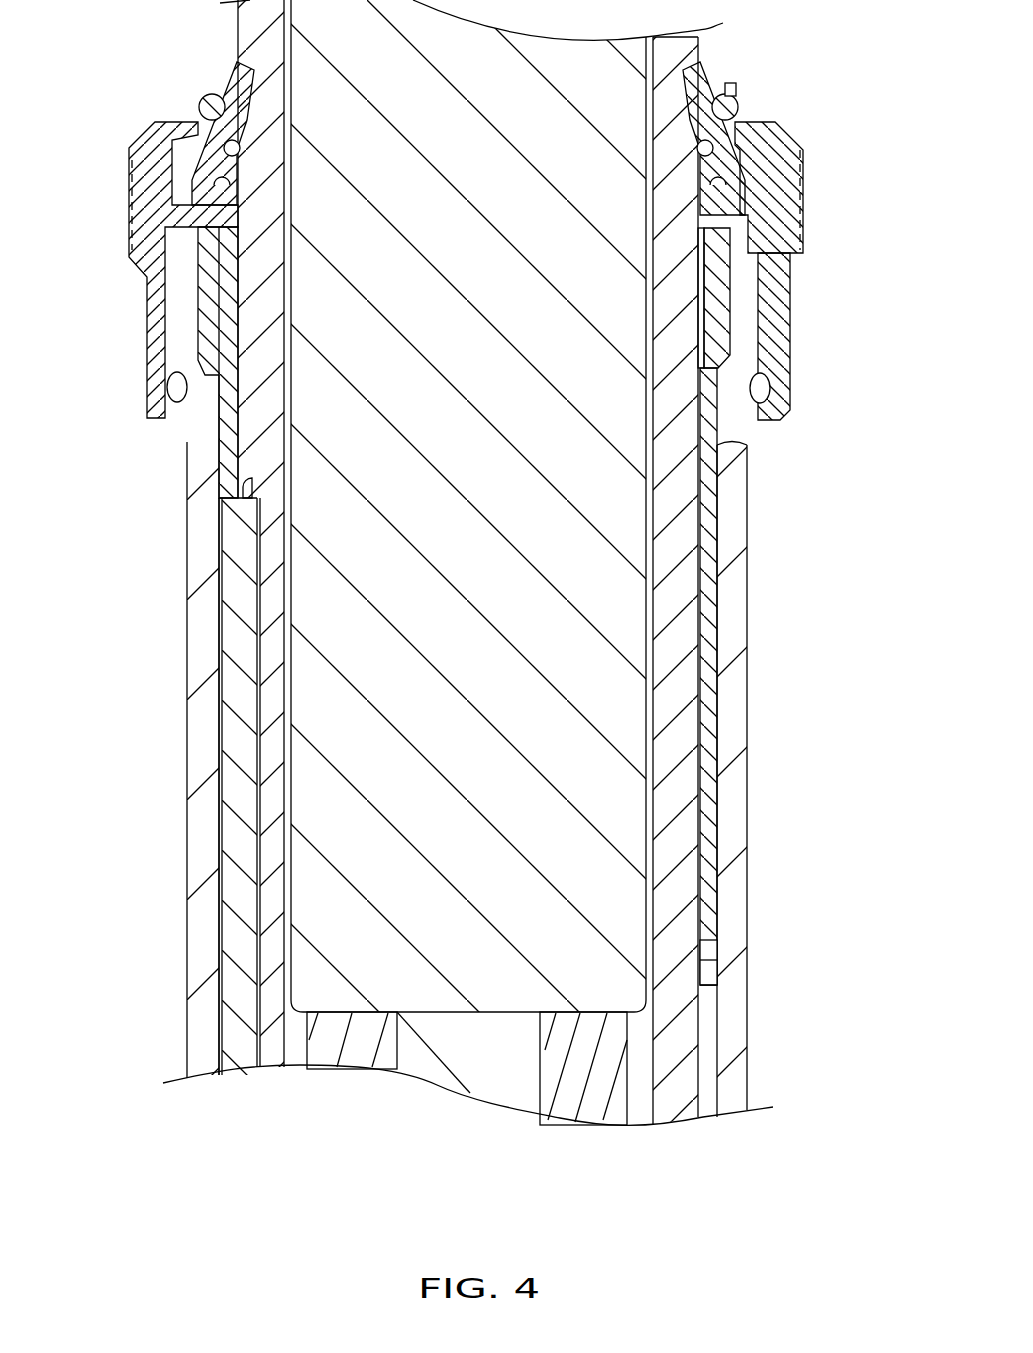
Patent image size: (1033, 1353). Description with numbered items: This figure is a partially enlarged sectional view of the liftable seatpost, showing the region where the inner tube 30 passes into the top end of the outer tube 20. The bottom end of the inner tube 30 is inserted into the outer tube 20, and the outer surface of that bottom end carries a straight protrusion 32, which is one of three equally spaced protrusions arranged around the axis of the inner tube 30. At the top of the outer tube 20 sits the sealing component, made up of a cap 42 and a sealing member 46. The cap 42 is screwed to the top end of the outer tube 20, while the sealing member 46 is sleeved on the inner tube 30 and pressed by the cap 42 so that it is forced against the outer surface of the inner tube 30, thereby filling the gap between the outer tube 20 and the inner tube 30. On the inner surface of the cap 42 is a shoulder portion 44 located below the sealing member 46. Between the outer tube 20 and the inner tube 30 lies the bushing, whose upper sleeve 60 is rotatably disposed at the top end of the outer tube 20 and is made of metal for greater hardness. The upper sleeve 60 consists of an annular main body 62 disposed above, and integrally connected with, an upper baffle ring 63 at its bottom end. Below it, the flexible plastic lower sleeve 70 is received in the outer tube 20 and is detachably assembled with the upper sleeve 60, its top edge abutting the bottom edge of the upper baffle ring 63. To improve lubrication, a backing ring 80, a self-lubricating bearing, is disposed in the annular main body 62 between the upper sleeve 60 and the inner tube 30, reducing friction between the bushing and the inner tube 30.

The outer tube 20 is at (206, 748).
The inner tube 30 is at (270, 937).
The protrusion 32 is at (240, 630).
The cap 42 is at (806, 172).
The shoulder portion 44 is at (745, 215).
The sealing member 46 is at (185, 150).
The upper sleeve 60 is at (810, 336).
The annular main body 62 is at (724, 308).
The upper baffle ring 63 is at (805, 408).
The lower sleeve 70 is at (232, 453).
The backing ring 80 is at (708, 292).